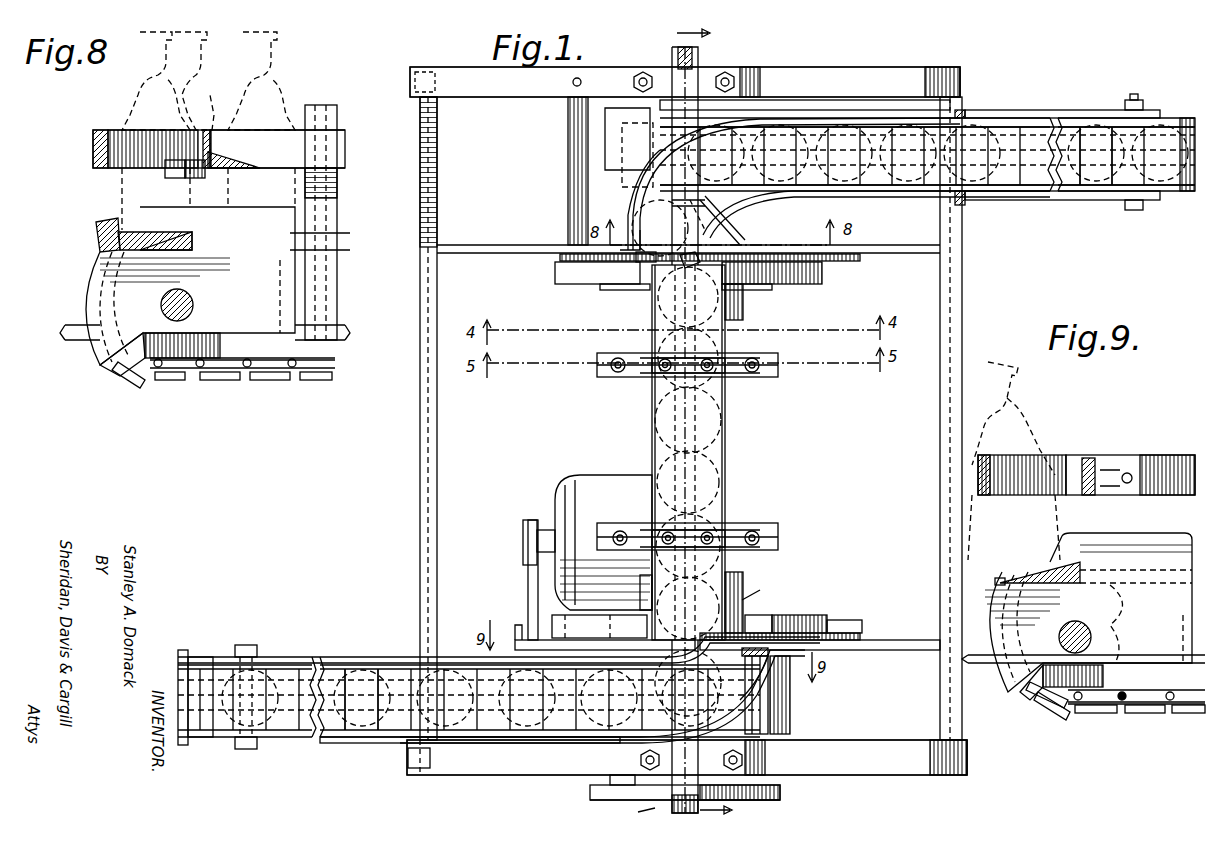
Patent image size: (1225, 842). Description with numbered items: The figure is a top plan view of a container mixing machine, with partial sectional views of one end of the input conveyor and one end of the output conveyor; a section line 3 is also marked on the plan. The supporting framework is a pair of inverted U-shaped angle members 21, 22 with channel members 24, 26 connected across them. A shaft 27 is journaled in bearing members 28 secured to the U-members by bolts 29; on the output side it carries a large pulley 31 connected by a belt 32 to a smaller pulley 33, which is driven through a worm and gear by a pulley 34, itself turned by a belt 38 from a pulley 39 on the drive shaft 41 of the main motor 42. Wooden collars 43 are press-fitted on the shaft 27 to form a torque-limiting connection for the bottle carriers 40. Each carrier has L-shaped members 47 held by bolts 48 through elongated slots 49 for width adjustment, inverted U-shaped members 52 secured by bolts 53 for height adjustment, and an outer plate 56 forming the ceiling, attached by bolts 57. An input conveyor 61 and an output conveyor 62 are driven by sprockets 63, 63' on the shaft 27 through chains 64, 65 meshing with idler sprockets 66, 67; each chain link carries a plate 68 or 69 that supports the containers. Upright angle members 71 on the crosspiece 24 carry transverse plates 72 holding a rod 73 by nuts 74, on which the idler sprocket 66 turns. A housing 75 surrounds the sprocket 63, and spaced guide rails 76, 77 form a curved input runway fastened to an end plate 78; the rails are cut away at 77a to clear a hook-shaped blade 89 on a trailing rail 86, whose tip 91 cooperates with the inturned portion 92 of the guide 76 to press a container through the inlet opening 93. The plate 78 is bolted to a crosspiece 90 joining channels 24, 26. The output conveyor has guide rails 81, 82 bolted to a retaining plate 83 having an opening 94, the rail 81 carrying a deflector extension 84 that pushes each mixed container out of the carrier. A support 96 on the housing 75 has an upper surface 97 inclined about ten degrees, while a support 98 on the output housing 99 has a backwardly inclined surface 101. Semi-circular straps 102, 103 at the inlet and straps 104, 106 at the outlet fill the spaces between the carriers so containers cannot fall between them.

In FIG. 1, the section line 3- 3 is at (685, 421).
In FIG. 1, the inverted U-shaped angle member 21 is at (900, 750).
In FIG. 1, the inverted U-shaped angle member 22 is at (852, 72).
In FIG. 1, the channel member 24 is at (950, 540).
In FIG. 1, the channel member 26 is at (420, 488).
In FIG. 8, the shaft 27 is at (193, 300).
In FIG. 1, the shaft 27 is at (698, 52).
In FIG. 9, the shaft 27 is at (1078, 620).
In FIG. 1, the bearing member 28 is at (725, 72).
In FIG. 1, the bolt 29 is at (643, 72).
In FIG. 1, the large pulley 31 is at (780, 790).
In FIG. 1, the belt 32 is at (780, 800).
In FIG. 1, the pulley 33 is at (590, 791).
In FIG. 1, the pulley 34 is at (523, 628).
In FIG. 1, the belt 38 is at (530, 590).
In FIG. 1, the pulley 39 is at (523, 530).
In FIG. 1, the bottle carrier 40 is at (742, 457).
In FIG. 1, the drive shaft 41 is at (540, 520).
In FIG. 1, the main motor 42 is at (618, 475).
In FIG. 1, the collar 43 is at (742, 292).
In FIG. 1, the L-shaped member 47 is at (600, 358).
In FIG. 1, the bolt 48 is at (618, 358).
In FIG. 1, the elongated slot 49 is at (600, 374).
In FIG. 1, the inverted U-shaped member 52 is at (672, 370).
In FIG. 1, the bolt 53 is at (660, 372).
In FIG. 1, the outer plate 56 is at (725, 462).
In FIG. 1, the bolt 57 is at (665, 372).
In FIG. 8, the input conveyor 61 is at (276, 393).
In FIG. 1, the input conveyor 61 is at (1024, 212).
In FIG. 1, the output conveyor 62 is at (304, 628).
In FIG. 9, the output conveyor 62 is at (1164, 726).
In FIG. 8, the conveyor driving sprocket 63 is at (160, 371).
In FIG. 1, the conveyor driving sprocket 63 is at (586, 171).
In FIG. 1, the conveyor driving sprocket 63' is at (772, 695).
In FIG. 9, the conveyor driving sprocket 63' is at (1045, 708).
In FIG. 8, the chain 64 is at (285, 368).
In FIG. 1, the chain 64 is at (1018, 140).
In FIG. 1, the chain 65 is at (358, 744).
In FIG. 9, the chain 65 is at (1128, 690).
In FIG. 1, the idler sprocket 66 is at (1175, 195).
In FIG. 1, the idler sprocket 67 is at (226, 657).
In FIG. 8, the plate 68 is at (248, 380).
In FIG. 1, the plate 68 is at (1110, 127).
In FIG. 1, the plate 69 is at (345, 672).
In FIG. 9, the plate 69 is at (1078, 716).
In FIG. 1, the angle member 71 is at (962, 110).
In FIG. 1, the transverse plate 72 is at (1056, 110).
In FIG. 1, the rod 73 is at (1133, 95).
In FIG. 1, the nut 74 is at (1143, 100).
In FIG. 8, the housing 75 is at (92, 258).
In FIG. 1, the housing 75 is at (605, 130).
In FIG. 8, the guide rail 76 is at (112, 130).
In FIG. 1, the guide rail 76 is at (872, 118).
In FIG. 8, the guide rail 77 is at (270, 140).
In FIG. 1, the guide rail 77 is at (878, 198).
In FIG. 8, the cut-away portion 77a is at (228, 166).
In FIG. 1, the inlet retaining plate 78 is at (865, 258).
In FIG. 1, the guide rail 81 is at (452, 657).
In FIG. 9, the guide rail 81 is at (1165, 445).
In FIG. 1, the guide rail 82 is at (480, 742).
In FIG. 9, the guide rail 82 is at (1056, 455).
In FIG. 1, the outlet retaining plate 83 is at (848, 650).
In FIG. 1, the deflector extension 84 is at (745, 598).
In FIG. 9, the deflector extension 84 is at (1092, 496).
In FIG. 8, the rail 86 is at (208, 168).
In FIG. 8, the blade 89 is at (192, 178).
In FIG. 1, the blade 89 is at (715, 220).
In FIG. 1, the crosspiece 90 is at (890, 240).
In FIG. 8, the tip 91 is at (165, 168).
In FIG. 1, the tip 91 is at (678, 204).
In FIG. 8, the inturned portion 92 is at (135, 245).
In FIG. 1, the inturned portion 92 is at (630, 210).
In FIG. 1, the inlet opening 93 is at (670, 268).
In FIG. 1, the opening 94 is at (772, 614).
In FIG. 8, the support 96 is at (96, 232).
In FIG. 1, the support 96 is at (612, 220).
In FIG. 8, the upper surface 97 is at (138, 232).
In FIG. 1, the upper surface 97 is at (645, 262).
In FIG. 1, the container support 98 is at (755, 670).
In FIG. 9, the container support 98 is at (995, 575).
In FIG. 1, the output conveyor housing 99 is at (790, 712).
In FIG. 9, the output conveyor housing 99 is at (1010, 692).
In FIG. 1, the upper surface 101 is at (760, 652).
In FIG. 9, the upper surface 101 is at (1030, 555).
In FIG. 1, the semi-circular strap 102 is at (555, 272).
In FIG. 1, the semi-circular strap 103 is at (605, 284).
In FIG. 1, the strap 104 is at (580, 618).
In FIG. 1, the strap 106 is at (640, 580).